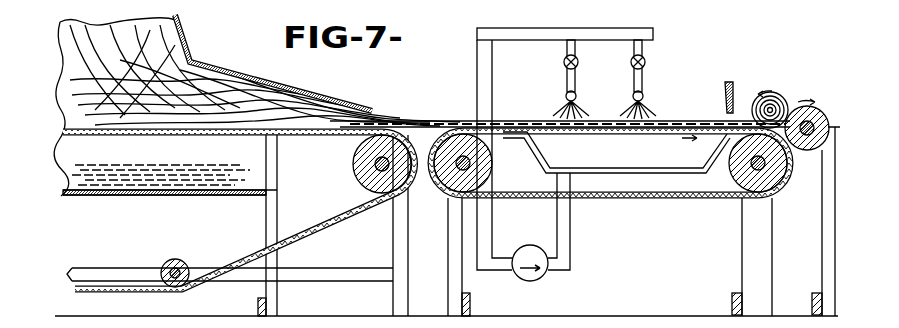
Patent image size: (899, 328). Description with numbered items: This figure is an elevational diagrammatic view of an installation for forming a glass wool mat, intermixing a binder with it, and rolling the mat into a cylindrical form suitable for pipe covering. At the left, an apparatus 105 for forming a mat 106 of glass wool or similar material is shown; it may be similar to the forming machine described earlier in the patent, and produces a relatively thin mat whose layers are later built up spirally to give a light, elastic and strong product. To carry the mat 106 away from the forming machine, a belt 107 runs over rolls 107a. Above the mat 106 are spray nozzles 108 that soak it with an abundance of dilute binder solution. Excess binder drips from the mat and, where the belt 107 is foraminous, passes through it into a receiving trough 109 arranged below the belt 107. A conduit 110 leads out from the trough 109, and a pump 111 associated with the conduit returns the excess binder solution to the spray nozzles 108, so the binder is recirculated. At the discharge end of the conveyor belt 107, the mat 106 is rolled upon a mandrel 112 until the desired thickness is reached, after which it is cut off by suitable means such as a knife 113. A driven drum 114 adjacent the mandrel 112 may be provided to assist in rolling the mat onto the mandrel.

The apparatus for forming a mat 105 is at (328, 86).
The mat 106 is at (458, 97).
The belt 107 is at (500, 134).
The rolls 107a is at (440, 186).
The spray nozzles 108 is at (633, 97).
The receiving trough 109 is at (610, 174).
The conduit 110 is at (567, 247).
The pump 111 is at (537, 280).
The mandrel 112 is at (790, 85).
The knife 113 is at (724, 91).
The driven drum 114 is at (806, 151).